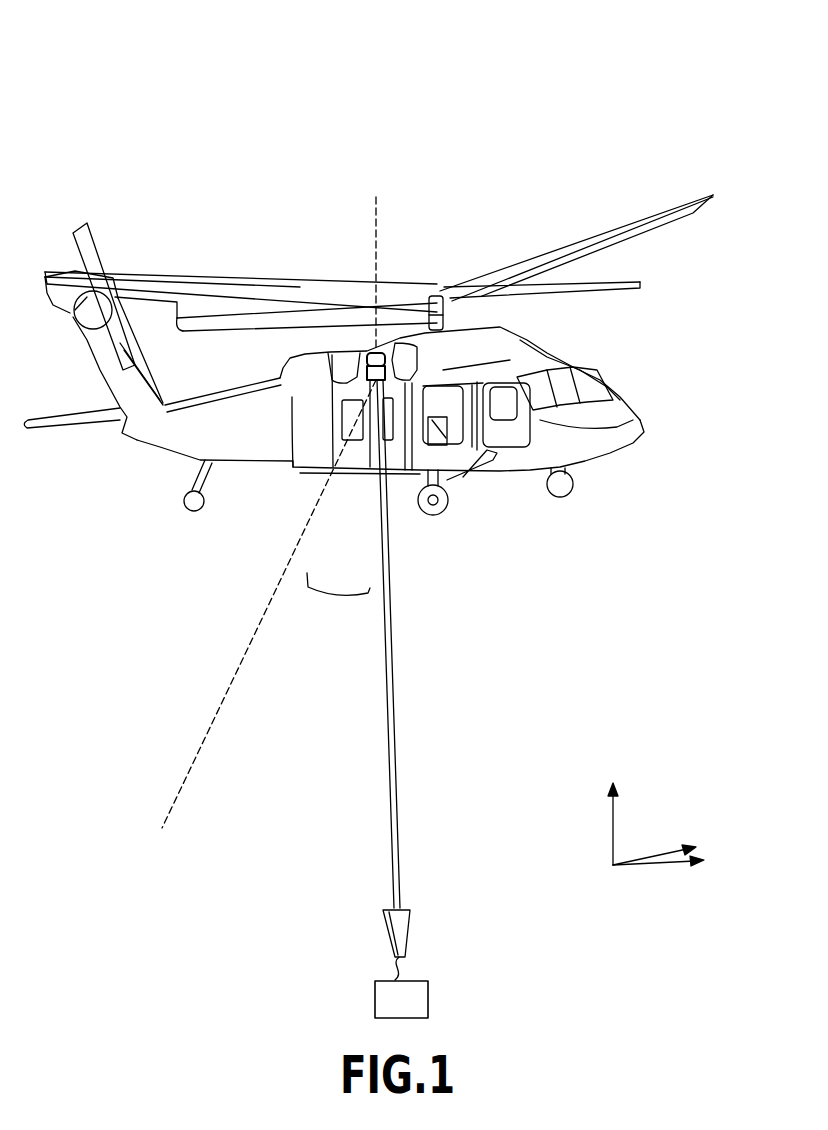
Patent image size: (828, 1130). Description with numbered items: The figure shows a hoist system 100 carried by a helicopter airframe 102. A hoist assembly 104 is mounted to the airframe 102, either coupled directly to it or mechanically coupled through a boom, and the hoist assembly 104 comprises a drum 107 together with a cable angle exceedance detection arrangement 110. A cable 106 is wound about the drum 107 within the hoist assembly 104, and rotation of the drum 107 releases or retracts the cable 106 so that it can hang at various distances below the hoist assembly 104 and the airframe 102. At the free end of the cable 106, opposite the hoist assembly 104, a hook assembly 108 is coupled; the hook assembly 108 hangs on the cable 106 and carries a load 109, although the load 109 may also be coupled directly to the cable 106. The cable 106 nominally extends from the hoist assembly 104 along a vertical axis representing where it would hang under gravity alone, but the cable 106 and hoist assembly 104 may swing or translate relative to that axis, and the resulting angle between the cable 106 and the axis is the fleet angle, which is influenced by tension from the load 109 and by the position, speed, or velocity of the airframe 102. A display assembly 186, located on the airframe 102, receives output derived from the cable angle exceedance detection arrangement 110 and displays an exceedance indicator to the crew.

The hoist system 100 is at (88, 106).
The airframe 102 is at (540, 350).
The hoist assembly 104 is at (347, 370).
The cable 106 is at (393, 650).
The drum 107 is at (376, 354).
The hook assembly 108 is at (413, 917).
The load 109 is at (430, 994).
The cable angle exceedance detection arrangement 110 is at (367, 368).
The display assembly 186 is at (443, 432).